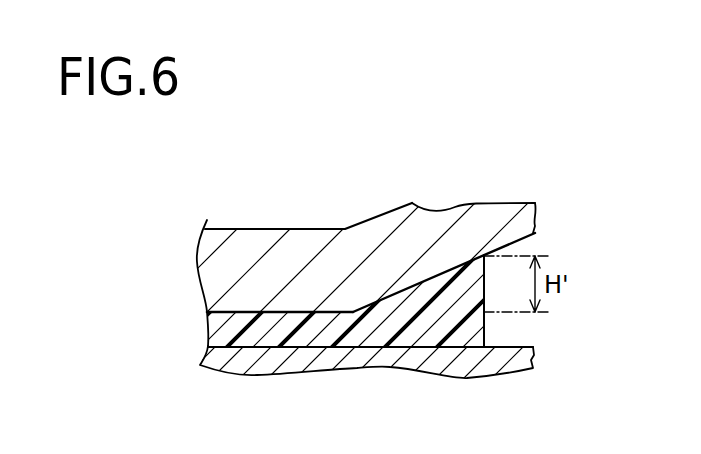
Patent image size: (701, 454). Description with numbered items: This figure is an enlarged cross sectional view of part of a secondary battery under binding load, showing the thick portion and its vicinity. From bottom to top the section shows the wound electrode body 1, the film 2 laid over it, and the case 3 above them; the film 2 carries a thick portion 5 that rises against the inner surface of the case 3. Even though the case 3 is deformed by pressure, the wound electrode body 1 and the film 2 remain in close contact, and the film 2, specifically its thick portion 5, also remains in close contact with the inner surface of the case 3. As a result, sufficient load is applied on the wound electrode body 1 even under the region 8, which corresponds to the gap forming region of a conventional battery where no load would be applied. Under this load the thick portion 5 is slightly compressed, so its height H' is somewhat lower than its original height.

The wound electrode body 1 is at (385, 362).
The film 2 is at (272, 335).
The case 3 is at (262, 247).
The thick portion 5 is at (453, 295).
The region 8 is at (353, 182).